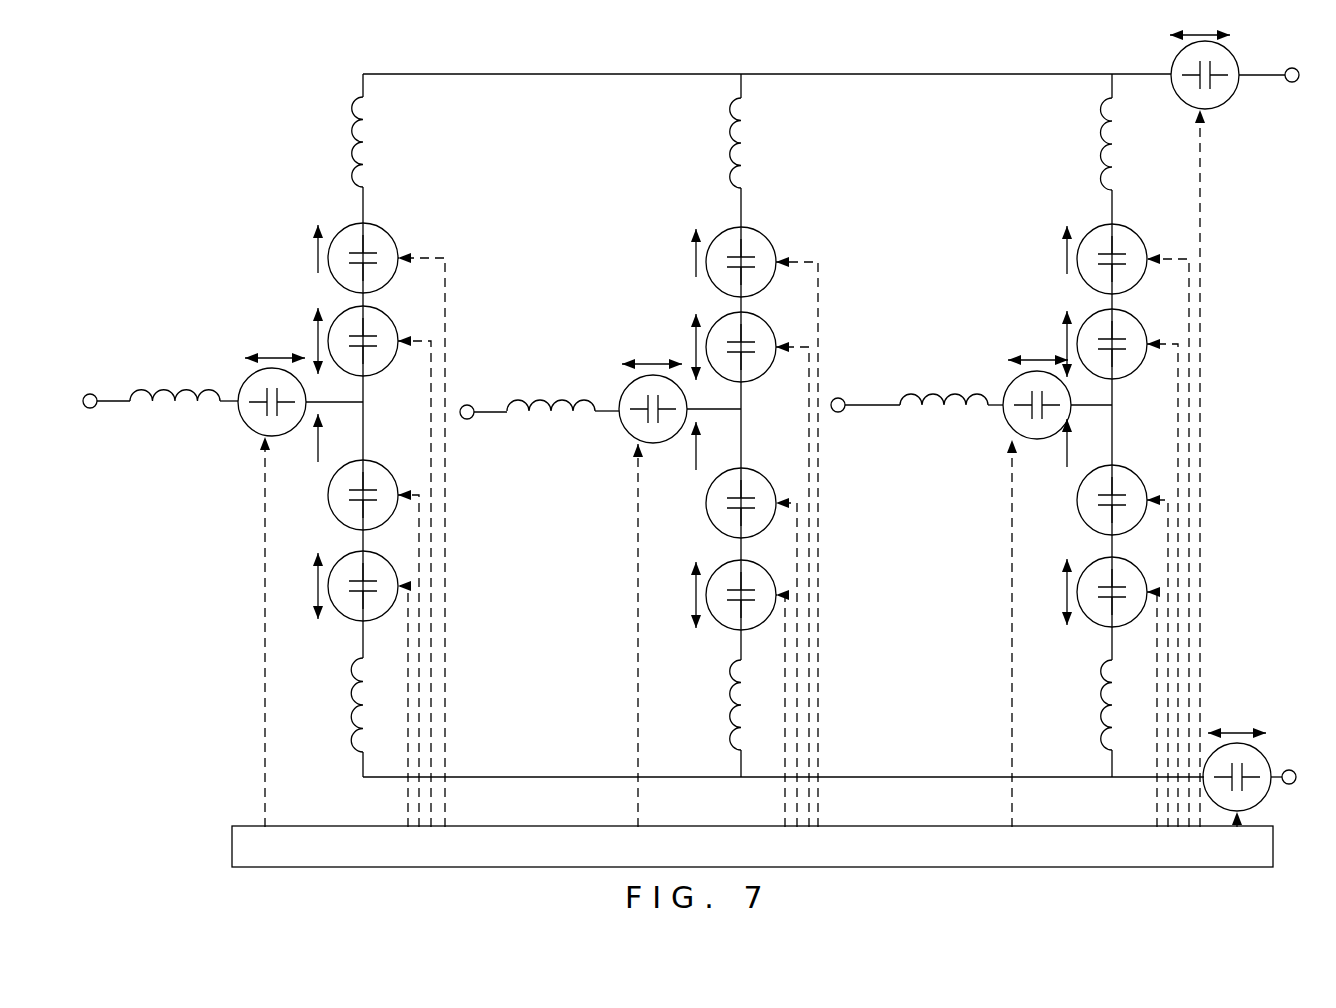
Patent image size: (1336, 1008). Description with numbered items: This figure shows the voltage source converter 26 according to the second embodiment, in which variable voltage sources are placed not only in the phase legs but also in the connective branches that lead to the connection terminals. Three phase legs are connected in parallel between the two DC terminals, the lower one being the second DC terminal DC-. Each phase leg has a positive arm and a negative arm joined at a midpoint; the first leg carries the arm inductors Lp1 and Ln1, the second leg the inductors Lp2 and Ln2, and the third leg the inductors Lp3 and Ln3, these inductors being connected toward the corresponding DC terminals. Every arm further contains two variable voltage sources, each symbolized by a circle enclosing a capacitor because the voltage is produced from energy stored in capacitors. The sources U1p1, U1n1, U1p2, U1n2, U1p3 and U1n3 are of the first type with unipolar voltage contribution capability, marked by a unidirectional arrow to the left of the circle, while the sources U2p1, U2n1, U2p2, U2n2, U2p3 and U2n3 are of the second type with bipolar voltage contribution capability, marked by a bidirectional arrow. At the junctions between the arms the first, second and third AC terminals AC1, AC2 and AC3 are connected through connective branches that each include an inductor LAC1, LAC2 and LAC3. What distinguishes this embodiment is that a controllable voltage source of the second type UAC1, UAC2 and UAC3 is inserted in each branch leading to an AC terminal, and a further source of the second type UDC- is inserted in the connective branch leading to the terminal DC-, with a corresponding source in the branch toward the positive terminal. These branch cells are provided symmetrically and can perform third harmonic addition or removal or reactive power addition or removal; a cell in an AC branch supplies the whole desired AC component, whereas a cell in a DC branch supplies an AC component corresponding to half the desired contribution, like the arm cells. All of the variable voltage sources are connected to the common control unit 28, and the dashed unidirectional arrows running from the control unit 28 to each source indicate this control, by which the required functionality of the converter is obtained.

The voltage source converter 26 is at (218, 190).
The common control unit 28 is at (752, 846).
The inductor of positive arm p1 Lp1 is at (328, 142).
The inductor of negative arm n1 Ln1 is at (328, 705).
The variable voltage source of the first type U1p1 is at (361, 507).
The variable voltage source of the second type U2p1 is at (344, 550).
The variable voltage source of the first type U1n1 is at (352, 620).
The variable voltage source of the second type U2n1 is at (341, 676).
The first AC terminal AC1 is at (98, 375).
The inductor LAC1 is at (184, 420).
The controllable voltage source of the second type UAC1 is at (297, 575).
The inductor of positive arm p2 Lp2 is at (704, 143).
The inductor of negative arm n2 Ln2 is at (698, 705).
The variable voltage source of the first type U1p2 is at (735, 510).
The variable voltage source of the second type U2p2 is at (723, 555).
The variable voltage source of the first type U1n2 is at (727, 624).
The variable voltage source of the second type U2n2 is at (716, 677).
The second AC terminal AC2 is at (485, 386).
The inductor LAC2 is at (563, 424).
The controllable voltage source of the second type UAC2 is at (670, 576).
The inductor of positive arm p3 Lp3 is at (1076, 144).
The inductor of negative arm n3 Ln3 is at (1073, 705).
The variable voltage source of the first type U1p3 is at (1099, 510).
The variable voltage source of the second type U2p3 is at (1097, 555).
The variable voltage source of the first type U1n3 is at (1098, 623).
The variable voltage source of the second type U2n3 is at (1087, 677).
The third AC terminal AC3 is at (860, 383).
The inductor LAC3 is at (951, 424).
The controllable voltage source of the second type UAC3 is at (1041, 574).
The controllable voltage source of the second type UDC- is at (1245, 749).
The second DC terminal DC- is at (1301, 750).